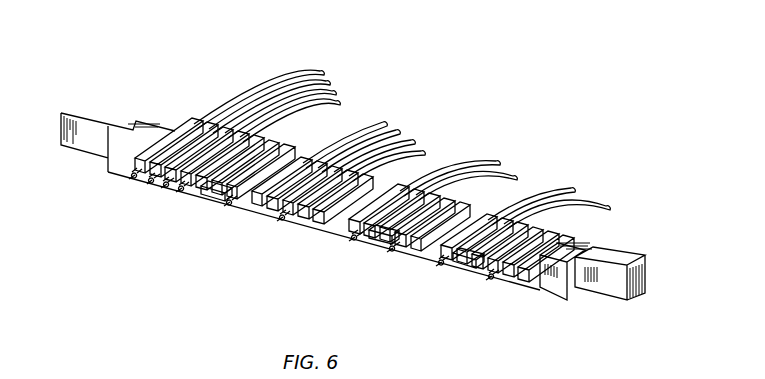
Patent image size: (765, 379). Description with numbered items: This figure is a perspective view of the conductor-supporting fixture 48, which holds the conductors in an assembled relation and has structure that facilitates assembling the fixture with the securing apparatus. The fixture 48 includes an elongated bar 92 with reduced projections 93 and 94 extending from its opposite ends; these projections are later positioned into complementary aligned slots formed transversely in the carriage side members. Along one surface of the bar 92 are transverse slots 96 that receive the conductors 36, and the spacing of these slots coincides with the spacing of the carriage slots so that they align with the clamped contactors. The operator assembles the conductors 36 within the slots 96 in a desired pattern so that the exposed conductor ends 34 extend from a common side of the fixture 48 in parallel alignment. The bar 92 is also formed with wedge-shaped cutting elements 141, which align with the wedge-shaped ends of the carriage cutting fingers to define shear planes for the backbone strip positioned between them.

The conductor-supporting fixture 48 is at (186, 76).
The reduced projection 93 is at (74, 108).
The reduced projection 94 is at (626, 268).
The bar 92 is at (412, 250).
The transverse slots 96 is at (395, 195).
The conductors 36 is at (564, 192).
The wedge-shaped cutting elements 141 is at (200, 180).
The exposed conductor ends 34 is at (283, 220).